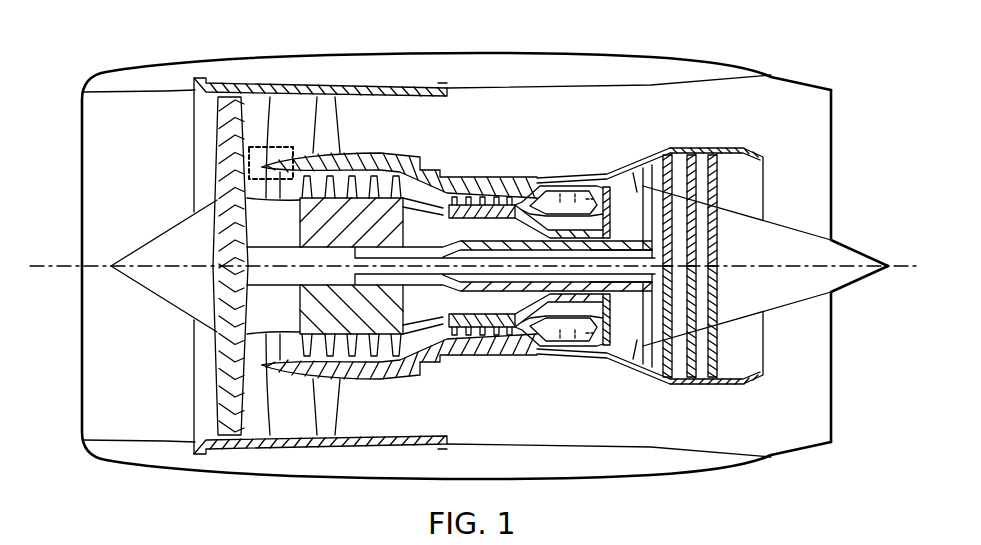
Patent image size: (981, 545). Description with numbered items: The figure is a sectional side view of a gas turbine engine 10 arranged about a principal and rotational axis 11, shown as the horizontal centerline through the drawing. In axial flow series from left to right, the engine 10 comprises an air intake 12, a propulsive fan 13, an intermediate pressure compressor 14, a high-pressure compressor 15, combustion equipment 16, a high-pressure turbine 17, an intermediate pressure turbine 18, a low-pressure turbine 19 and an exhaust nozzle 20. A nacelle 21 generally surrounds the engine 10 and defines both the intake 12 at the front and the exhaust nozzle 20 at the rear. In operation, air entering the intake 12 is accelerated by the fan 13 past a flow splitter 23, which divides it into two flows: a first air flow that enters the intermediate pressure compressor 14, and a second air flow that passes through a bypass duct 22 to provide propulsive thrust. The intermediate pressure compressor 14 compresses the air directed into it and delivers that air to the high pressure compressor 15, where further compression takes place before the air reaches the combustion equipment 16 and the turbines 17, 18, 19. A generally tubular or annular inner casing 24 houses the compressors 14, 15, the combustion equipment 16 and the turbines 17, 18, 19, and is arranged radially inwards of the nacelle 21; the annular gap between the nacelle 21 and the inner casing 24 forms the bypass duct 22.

The gas turbine engine 10 is at (66, 104).
The principal and rotational axis 11 is at (63, 264).
The air intake 12 is at (165, 92).
The propulsive fan 13 is at (215, 402).
The intermediate pressure compressor 14 is at (340, 320).
The high-pressure compressor 15 is at (482, 195).
The combustion equipment 16 is at (560, 334).
The high-pressure turbine 17 is at (607, 344).
The intermediate pressure turbine 18 is at (652, 172).
The low-pressure turbine 19 is at (667, 372).
The exhaust nozzle 20 is at (831, 410).
The nacelle 21 is at (497, 75).
The bypass duct 22 is at (416, 134).
The flow splitter 23 is at (271, 165).
The inner casing 24 is at (463, 352).